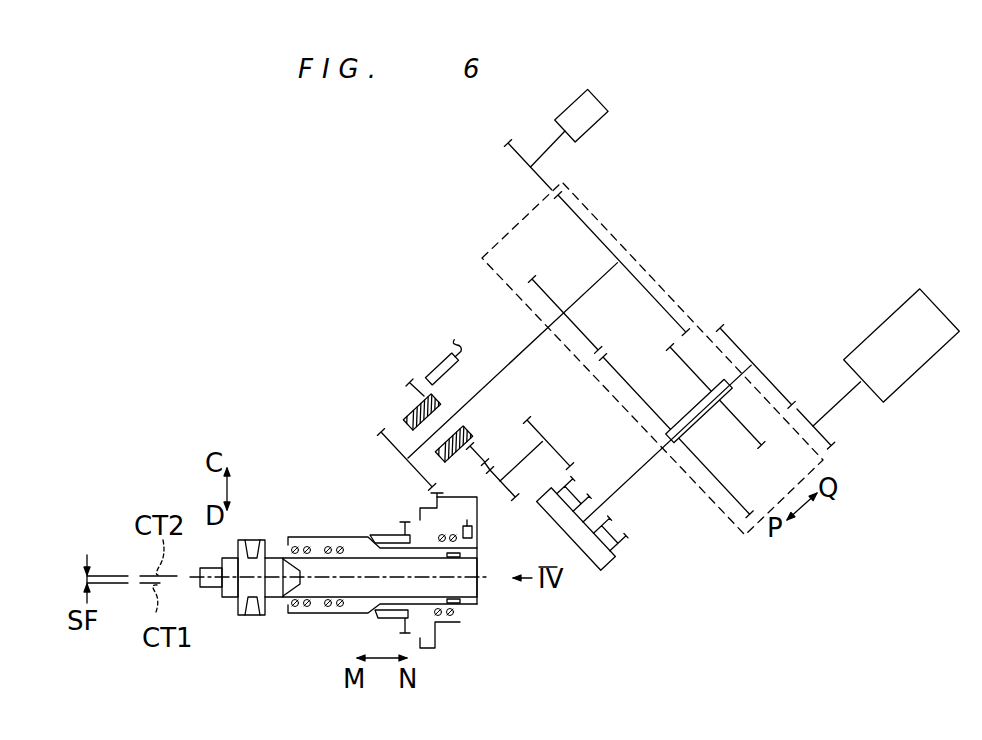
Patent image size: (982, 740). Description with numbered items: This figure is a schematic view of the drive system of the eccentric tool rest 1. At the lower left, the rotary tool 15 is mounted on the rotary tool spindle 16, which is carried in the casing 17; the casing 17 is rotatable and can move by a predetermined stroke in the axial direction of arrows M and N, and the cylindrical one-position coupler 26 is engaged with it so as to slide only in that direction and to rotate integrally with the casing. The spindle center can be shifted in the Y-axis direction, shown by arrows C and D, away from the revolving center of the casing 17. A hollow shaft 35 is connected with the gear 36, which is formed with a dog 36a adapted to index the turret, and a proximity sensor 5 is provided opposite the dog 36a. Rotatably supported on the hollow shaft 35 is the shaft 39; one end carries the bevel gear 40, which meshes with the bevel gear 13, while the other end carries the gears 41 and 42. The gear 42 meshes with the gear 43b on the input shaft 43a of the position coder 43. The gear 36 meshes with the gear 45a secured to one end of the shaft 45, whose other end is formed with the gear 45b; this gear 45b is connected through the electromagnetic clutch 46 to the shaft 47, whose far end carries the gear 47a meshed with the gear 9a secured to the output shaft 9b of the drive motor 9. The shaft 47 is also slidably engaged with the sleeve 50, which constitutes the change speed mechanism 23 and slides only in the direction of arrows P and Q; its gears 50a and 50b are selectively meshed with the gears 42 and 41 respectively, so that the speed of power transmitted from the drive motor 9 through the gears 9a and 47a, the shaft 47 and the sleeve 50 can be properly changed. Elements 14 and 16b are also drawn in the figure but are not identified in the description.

The eccentric tool rest 1 is at (353, 218).
The proximity sensor 5 is at (440, 360).
The drive motor 9 is at (906, 382).
The gear 9a is at (832, 448).
The output shaft 9b is at (841, 402).
The bevel gear 13 is at (437, 503).
The coupling 14 is at (487, 469).
The rotary tool 15 is at (260, 618).
The rotary tool spindle 16 is at (353, 565).
The housing 16b is at (479, 546).
The casing 17 is at (300, 540).
The change speed mechanism 23 is at (676, 298).
The one-position coupler 26 is at (376, 617).
The hollow shaft 35 is at (477, 456).
The gear 36 is at (476, 448).
The dog 36a is at (412, 380).
The shaft 39 is at (503, 368).
The bevel gear 40 is at (393, 446).
The gear 41 is at (539, 280).
The gear 42 is at (600, 238).
The position coder 43 is at (606, 118).
The input shaft 43a is at (543, 150).
The gear 43b is at (540, 169).
The shaft 45 is at (523, 459).
The gear 45a is at (515, 497).
The gear 45b is at (533, 424).
The electromagnetic clutch 46 is at (612, 562).
The shaft 47 is at (641, 470).
The gear 47a is at (746, 354).
The sleeve 50 is at (688, 410).
The gear 50a is at (739, 421).
The gear 50b is at (614, 370).